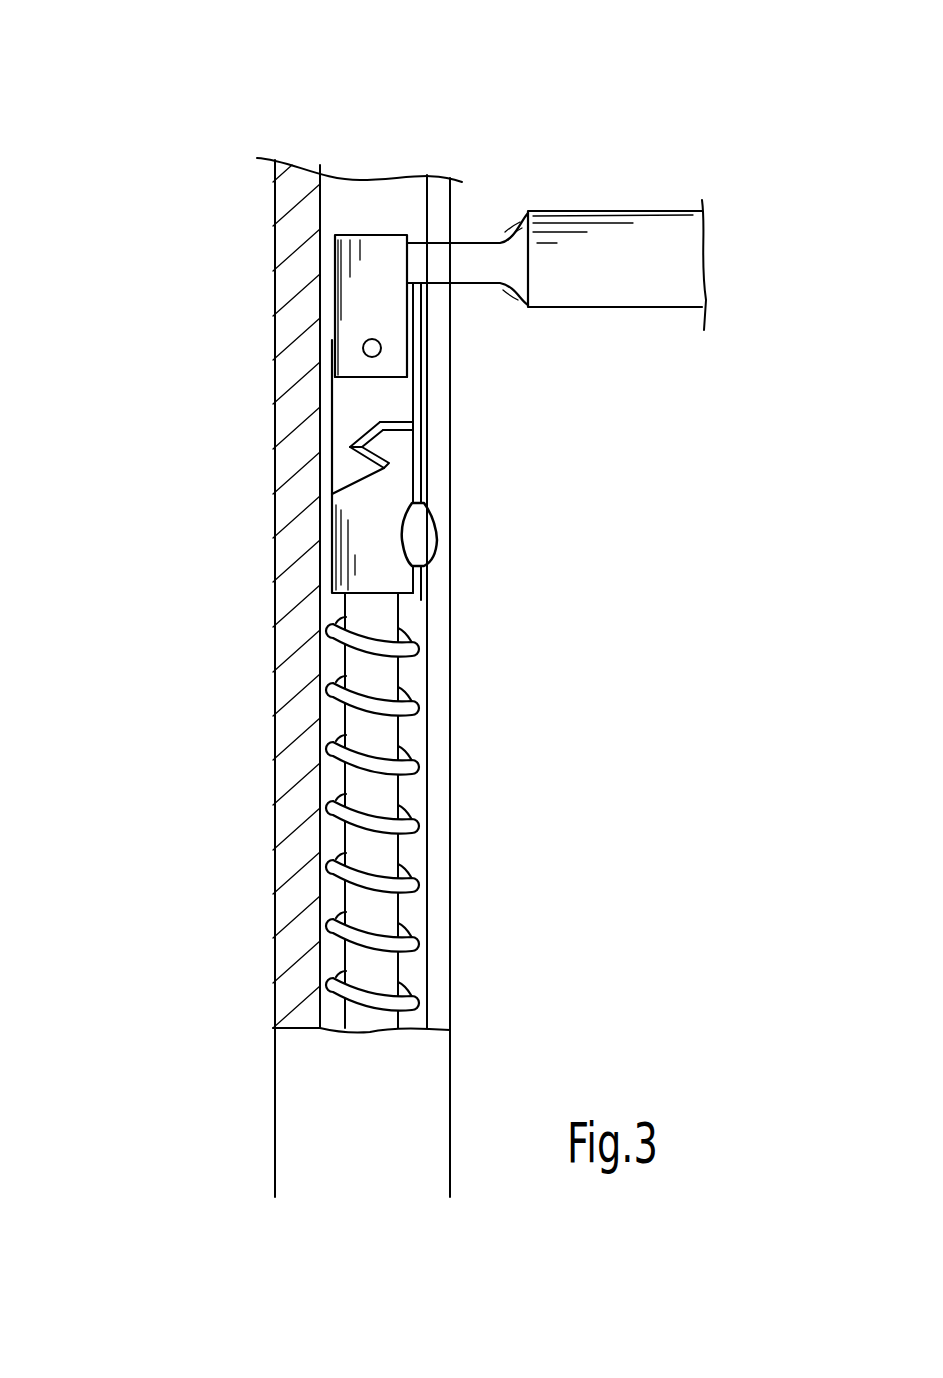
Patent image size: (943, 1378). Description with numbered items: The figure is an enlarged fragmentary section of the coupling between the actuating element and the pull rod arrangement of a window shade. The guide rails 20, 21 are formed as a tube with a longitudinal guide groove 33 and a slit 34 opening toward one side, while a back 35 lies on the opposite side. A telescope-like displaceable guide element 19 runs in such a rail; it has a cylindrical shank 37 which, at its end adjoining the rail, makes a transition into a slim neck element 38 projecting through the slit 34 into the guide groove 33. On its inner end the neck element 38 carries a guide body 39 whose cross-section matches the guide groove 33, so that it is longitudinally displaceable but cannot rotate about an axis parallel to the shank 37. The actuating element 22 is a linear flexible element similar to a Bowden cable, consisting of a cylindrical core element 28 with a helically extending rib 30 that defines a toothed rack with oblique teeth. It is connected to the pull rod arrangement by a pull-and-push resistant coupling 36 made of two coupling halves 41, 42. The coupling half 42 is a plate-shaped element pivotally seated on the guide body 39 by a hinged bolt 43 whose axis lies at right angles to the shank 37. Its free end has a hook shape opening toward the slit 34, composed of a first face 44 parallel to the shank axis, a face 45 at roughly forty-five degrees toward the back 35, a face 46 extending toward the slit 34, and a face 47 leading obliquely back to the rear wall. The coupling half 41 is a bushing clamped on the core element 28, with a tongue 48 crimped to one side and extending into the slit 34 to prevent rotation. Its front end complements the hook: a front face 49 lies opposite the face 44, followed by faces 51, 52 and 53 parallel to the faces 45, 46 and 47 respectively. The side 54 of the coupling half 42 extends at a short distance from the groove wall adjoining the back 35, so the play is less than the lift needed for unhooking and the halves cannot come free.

The guide element 19 is at (692, 138).
The guide rail 20 is at (266, 268).
The guide rail 21 is at (359, 593).
The actuating element 22 is at (426, 681).
The core element 28 is at (385, 800).
The helically extending rib 30 is at (407, 763).
The guide groove 33 is at (351, 200).
The slit 34 is at (438, 212).
The back 35 is at (292, 195).
The coupling 36 is at (204, 496).
The cylindrical shank 37 is at (652, 308).
The neck element 38 is at (480, 287).
The guide body 39 is at (377, 280).
The coupling half 41 is at (364, 548).
The coupling half 42 is at (355, 410).
The hinged bolt 43 is at (382, 348).
The first face 44 is at (415, 415).
The face 45 is at (370, 424).
The face 46 is at (350, 458).
The face 47 is at (327, 470).
The tongue 48 is at (433, 557).
The front face 49 is at (385, 435).
The face 51 is at (390, 452).
The face 52 is at (398, 458).
The face 53 is at (357, 487).
The side 54 is at (345, 382).